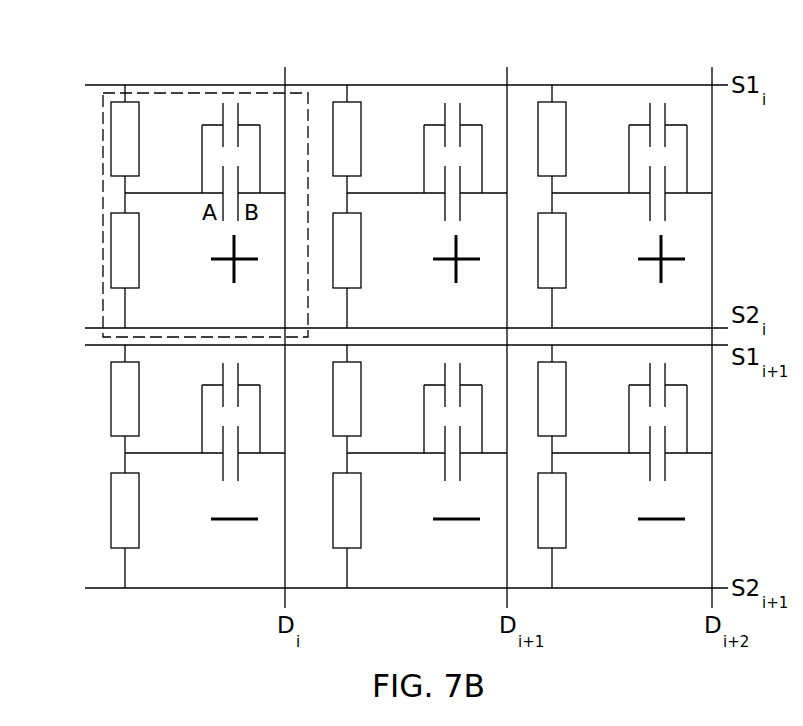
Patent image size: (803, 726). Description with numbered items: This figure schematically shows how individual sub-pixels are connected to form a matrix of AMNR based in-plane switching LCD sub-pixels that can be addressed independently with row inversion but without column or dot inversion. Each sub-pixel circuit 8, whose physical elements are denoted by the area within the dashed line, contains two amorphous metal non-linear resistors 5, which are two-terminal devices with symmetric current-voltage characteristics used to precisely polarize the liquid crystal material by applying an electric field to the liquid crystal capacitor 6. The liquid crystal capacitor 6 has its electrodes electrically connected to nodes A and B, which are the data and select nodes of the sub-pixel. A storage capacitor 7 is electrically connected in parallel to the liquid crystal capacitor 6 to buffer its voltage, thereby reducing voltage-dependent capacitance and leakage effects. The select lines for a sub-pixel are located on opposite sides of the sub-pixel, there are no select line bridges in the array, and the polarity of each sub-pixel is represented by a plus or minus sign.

The amorphous metal non-linear resistor 5 is at (106, 136).
The liquid crystal capacitor 6 is at (220, 183).
The storage capacitor 7 is at (220, 113).
The sub-pixel circuit 8 is at (101, 305).